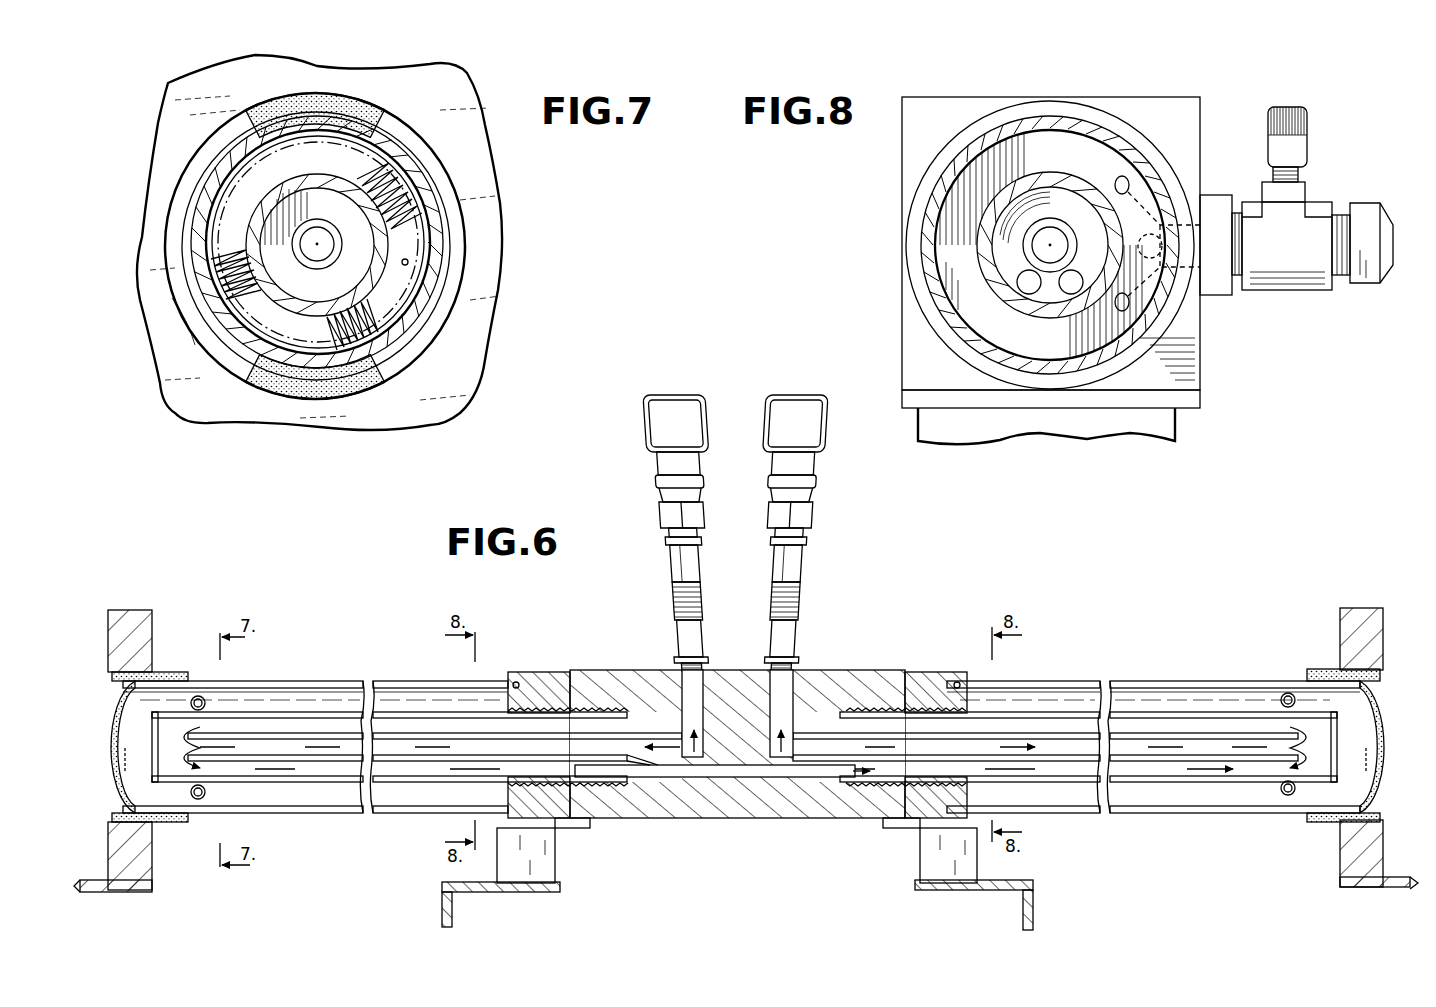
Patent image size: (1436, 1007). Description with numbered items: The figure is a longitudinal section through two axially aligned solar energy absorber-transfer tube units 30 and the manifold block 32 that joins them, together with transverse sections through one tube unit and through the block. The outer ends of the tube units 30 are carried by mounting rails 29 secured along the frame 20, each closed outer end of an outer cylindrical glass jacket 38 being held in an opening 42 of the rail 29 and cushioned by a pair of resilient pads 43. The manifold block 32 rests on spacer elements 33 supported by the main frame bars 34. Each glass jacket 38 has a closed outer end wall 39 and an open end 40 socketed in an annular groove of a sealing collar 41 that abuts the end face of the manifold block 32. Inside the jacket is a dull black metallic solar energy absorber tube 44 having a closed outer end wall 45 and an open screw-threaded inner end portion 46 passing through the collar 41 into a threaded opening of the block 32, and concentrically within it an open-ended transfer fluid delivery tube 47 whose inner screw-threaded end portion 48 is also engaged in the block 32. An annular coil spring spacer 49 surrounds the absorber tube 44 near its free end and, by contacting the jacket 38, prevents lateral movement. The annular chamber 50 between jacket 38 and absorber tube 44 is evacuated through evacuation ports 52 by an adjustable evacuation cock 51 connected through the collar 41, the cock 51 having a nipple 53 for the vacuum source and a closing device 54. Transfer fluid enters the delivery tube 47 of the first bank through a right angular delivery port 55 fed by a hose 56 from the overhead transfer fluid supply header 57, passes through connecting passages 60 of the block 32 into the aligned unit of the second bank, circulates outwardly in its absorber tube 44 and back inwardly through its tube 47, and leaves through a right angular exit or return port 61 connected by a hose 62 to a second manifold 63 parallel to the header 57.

In FIG. 6, the frame 20 is at (128, 893).
In FIG. 6, the mounting rails 29 is at (110, 632).
In FIG. 7, the mounting rails 29 is at (445, 94).
In FIG. 6, the solar energy absorber-transfer tube units 30 is at (341, 682).
In FIG. 7, the solar energy absorber-transfer tube units 30 is at (455, 193).
In FIG. 8, the solar energy absorber-transfer tube units 30 is at (975, 135).
In FIG. 6, the manifold block 32 is at (850, 682).
In FIG. 8, the manifold block 32 is at (1160, 102).
In FIG. 6, the spacer elements 33 is at (548, 873).
In FIG. 8, the spacer elements 33 is at (1165, 432).
In FIG. 6, the main frame bars 34 is at (504, 893).
In FIG. 6, the outer cylindrical glass jacket 38 is at (418, 682).
In FIG. 7, the outer cylindrical glass jacket 38 is at (443, 293).
In FIG. 8, the outer cylindrical glass jacket 38 is at (1030, 120).
In FIG. 6, the closed outer end wall 39 is at (118, 752).
In FIG. 6, the open end 40 is at (536, 674).
In FIG. 6, the sealing collar 41 is at (560, 676).
In FIG. 8, the sealing collar 41 is at (1092, 110).
In FIG. 6, the opening 42 is at (138, 672).
In FIG. 7, the opening 42 is at (172, 298).
In FIG. 6, the resilient pads 43 is at (162, 672).
In FIG. 7, the resilient pads 43 is at (345, 96).
In FIG. 6, the solar energy absorber tube 44 is at (282, 712).
In FIG. 7, the solar energy absorber tube 44 is at (377, 302).
In FIG. 8, the solar energy absorber tube 44 is at (1076, 186).
In FIG. 6, the closed outer end wall 45 is at (152, 738).
In FIG. 6, the screw-threaded inner end portion 46 is at (602, 710).
In FIG. 6, the transfer fluid delivery tube 47 is at (336, 763).
In FIG. 7, the transfer fluid delivery tube 47 is at (341, 269).
In FIG. 8, the transfer fluid delivery tube 47 is at (1062, 245).
In FIG. 6, the inner screw-threaded end portion 48 is at (650, 768).
In FIG. 6, the annular coil spring spacer 49 is at (205, 699).
In FIG. 7, the annular coil spring spacer 49 is at (408, 263).
In FIG. 6, the annular chamber 50 is at (352, 698).
In FIG. 7, the annular chamber 50 is at (432, 238).
In FIG. 8, the annular chamber 50 is at (1096, 150).
In FIG. 8, the adjustable evacuation cock 51 is at (1290, 265).
In FIG. 8, the evacuation ports 52 is at (1130, 188).
In FIG. 8, the nipple 53 is at (1342, 275).
In FIG. 8, the closing device 54 is at (1297, 152).
In FIG. 6, the delivery port 55 is at (708, 682).
In FIG. 6, the hose 56 is at (700, 606).
In FIG. 6, the transfer fluid supply header 57 is at (679, 393).
In FIG. 6, the connecting passages 60 is at (750, 780).
In FIG. 8, the connecting passages 60 is at (1066, 292).
In FIG. 6, the exit or return port 61 is at (800, 686).
In FIG. 6, the hose 62 is at (808, 600).
In FIG. 6, the second manifold 63 is at (797, 393).